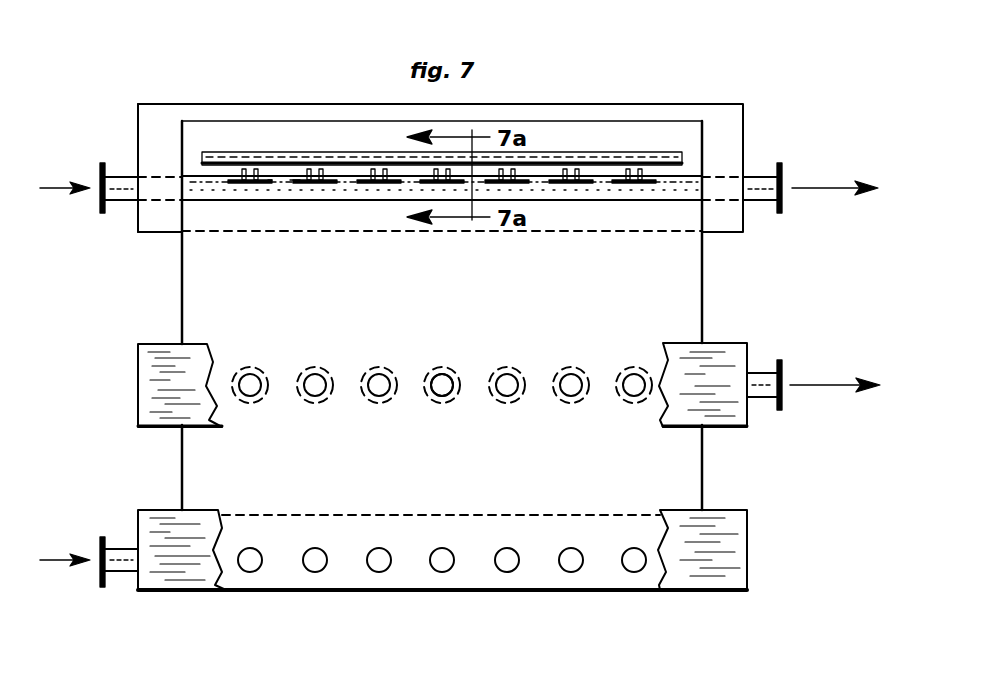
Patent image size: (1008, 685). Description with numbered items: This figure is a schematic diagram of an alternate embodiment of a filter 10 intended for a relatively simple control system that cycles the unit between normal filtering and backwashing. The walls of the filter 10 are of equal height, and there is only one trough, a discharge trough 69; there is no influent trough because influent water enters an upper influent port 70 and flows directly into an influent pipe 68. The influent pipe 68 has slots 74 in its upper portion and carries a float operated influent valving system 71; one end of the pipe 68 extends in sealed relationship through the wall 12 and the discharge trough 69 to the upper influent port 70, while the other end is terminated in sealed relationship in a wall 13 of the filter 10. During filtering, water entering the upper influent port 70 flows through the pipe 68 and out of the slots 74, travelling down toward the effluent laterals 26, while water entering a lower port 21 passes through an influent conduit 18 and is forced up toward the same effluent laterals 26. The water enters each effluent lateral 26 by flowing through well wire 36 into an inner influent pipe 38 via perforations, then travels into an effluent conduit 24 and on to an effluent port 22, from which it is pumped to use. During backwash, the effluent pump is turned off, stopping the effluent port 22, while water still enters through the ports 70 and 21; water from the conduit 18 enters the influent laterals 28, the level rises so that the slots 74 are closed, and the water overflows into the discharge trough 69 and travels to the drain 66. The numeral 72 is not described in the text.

The filter 10 is at (425, 645).
The wall 12 is at (180, 265).
The wall 13 is at (703, 148).
The influent conduit 18 is at (178, 582).
The port 21 is at (122, 572).
The effluent port 22 is at (757, 403).
The effluent conduit 24 is at (152, 378).
The effluent laterals 26 is at (390, 350).
The influent laterals 28 is at (567, 572).
The well wire 36 is at (570, 368).
The inner influent pipe 38 is at (442, 393).
The drain 66 is at (790, 175).
The influent pipe 68 is at (205, 192).
The discharge trough 69 is at (143, 148).
The upper influent port 70 is at (123, 202).
The float operated influent valving system 71 is at (593, 138).
The rack 72 is at (253, 152).
The slots 74 is at (523, 170).